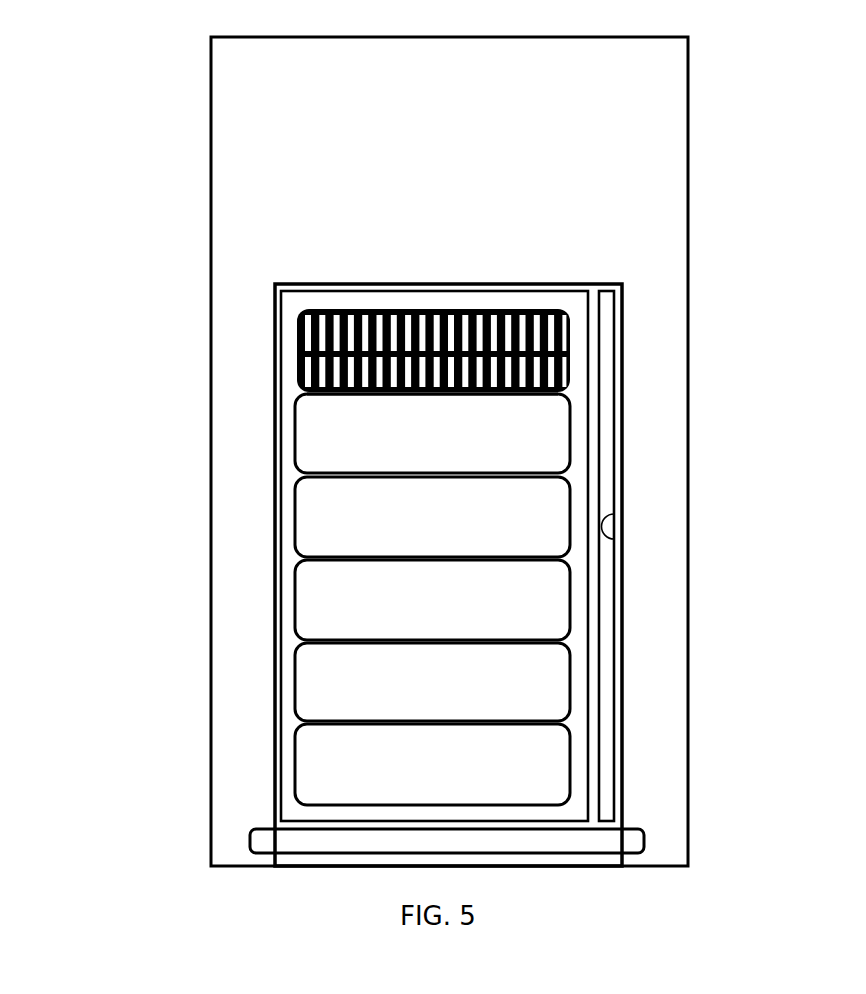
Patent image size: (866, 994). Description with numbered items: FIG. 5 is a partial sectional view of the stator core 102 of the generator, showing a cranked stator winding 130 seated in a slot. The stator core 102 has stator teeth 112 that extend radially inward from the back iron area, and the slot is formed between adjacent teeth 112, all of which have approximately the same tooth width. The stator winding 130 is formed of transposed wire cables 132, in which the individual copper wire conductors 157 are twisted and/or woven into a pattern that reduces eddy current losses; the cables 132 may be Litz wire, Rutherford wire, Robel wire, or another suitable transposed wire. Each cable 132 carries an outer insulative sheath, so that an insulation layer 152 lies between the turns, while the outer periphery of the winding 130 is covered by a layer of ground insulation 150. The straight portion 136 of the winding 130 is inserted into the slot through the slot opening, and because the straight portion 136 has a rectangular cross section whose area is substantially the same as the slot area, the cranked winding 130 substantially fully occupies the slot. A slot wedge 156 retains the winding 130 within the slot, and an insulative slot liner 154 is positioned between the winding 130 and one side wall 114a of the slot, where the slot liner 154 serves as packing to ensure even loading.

The stator core 102 is at (445, 158).
The stator tooth 112 is at (227, 693).
The slot side wall 114a is at (618, 507).
The stator winding 130 is at (588, 463).
The straight portion 136 is at (434, 556).
The transposed wire cable 132 is at (298, 353).
The ground insulation 150 is at (297, 300).
The insulation layer 152 is at (342, 395).
The slot liner 154 is at (603, 640).
The slot wedge 156 is at (632, 843).
The copper wire conductor 157 is at (297, 378).